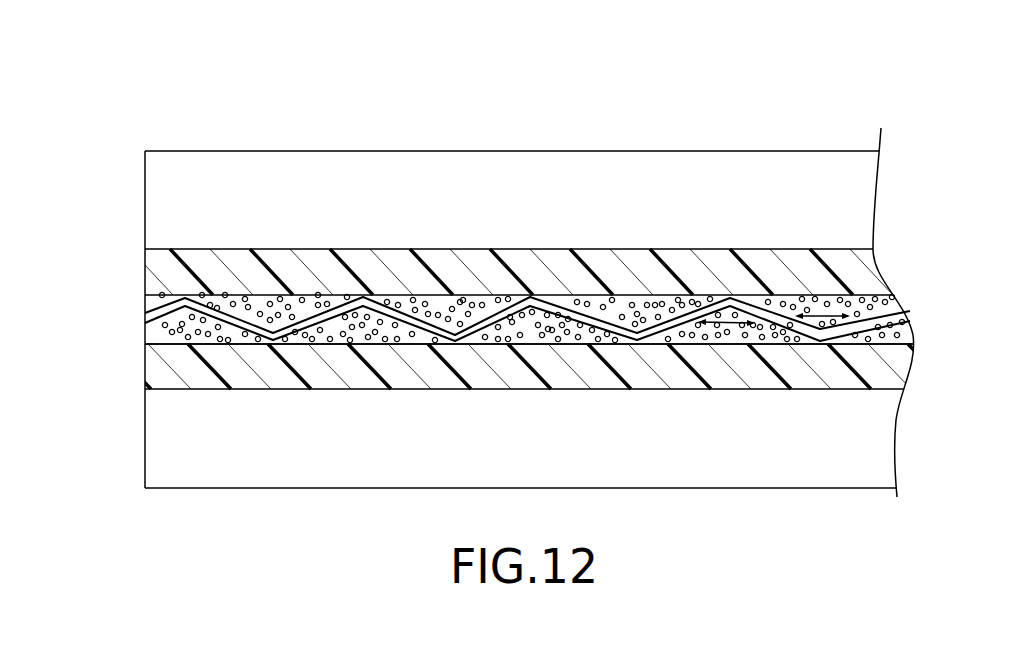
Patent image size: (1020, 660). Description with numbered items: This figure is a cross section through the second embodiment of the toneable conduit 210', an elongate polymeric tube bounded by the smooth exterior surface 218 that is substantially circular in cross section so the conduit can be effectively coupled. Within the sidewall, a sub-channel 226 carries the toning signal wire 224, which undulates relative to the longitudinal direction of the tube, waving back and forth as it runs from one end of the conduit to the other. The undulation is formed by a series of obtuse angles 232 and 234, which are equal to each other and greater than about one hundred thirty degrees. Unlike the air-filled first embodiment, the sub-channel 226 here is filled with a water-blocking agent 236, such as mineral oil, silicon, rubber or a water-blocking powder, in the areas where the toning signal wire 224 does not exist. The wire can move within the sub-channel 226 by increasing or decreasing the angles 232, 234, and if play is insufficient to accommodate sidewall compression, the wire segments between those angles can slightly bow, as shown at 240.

The toneable conduit 210' is at (529, 272).
The exterior surface 218 is at (277, 210).
The toning signal wire 224 is at (174, 313).
The sub-channel 226 is at (172, 344).
The obtuse angle 232 is at (823, 315).
The obtuse angle 234 is at (735, 322).
The water-blocking agent 236 is at (441, 305).
The bow 240 is at (523, 312).